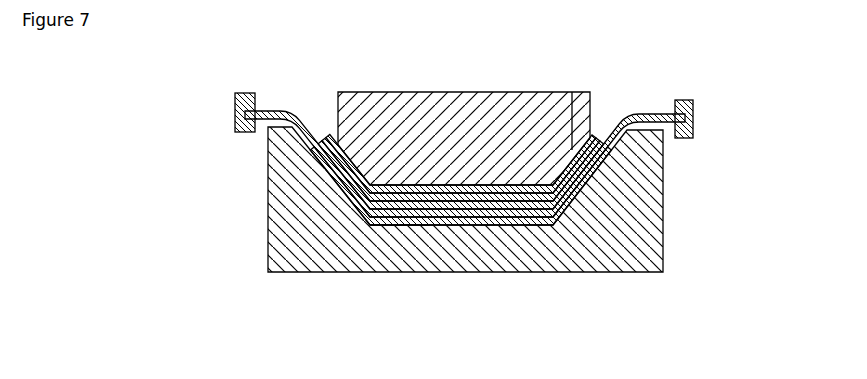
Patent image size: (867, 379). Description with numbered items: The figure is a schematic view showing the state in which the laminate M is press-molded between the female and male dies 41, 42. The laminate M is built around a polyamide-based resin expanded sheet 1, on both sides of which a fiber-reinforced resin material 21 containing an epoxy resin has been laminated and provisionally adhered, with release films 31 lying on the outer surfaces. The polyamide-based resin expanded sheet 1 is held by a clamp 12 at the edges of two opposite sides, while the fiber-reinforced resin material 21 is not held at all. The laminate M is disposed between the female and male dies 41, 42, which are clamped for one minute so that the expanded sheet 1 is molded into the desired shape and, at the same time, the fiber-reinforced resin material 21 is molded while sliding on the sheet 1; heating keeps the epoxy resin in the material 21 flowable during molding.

The polyamide-based resin expanded sheet 1 is at (640, 113).
The clamp 12 is at (245, 133).
The fiber-reinforced resin material 21 is at (571, 92).
The second layer film 31 is at (352, 132).
The female die 41 is at (663, 222).
The male die 42 is at (485, 100).
The laminate M is at (408, 227).